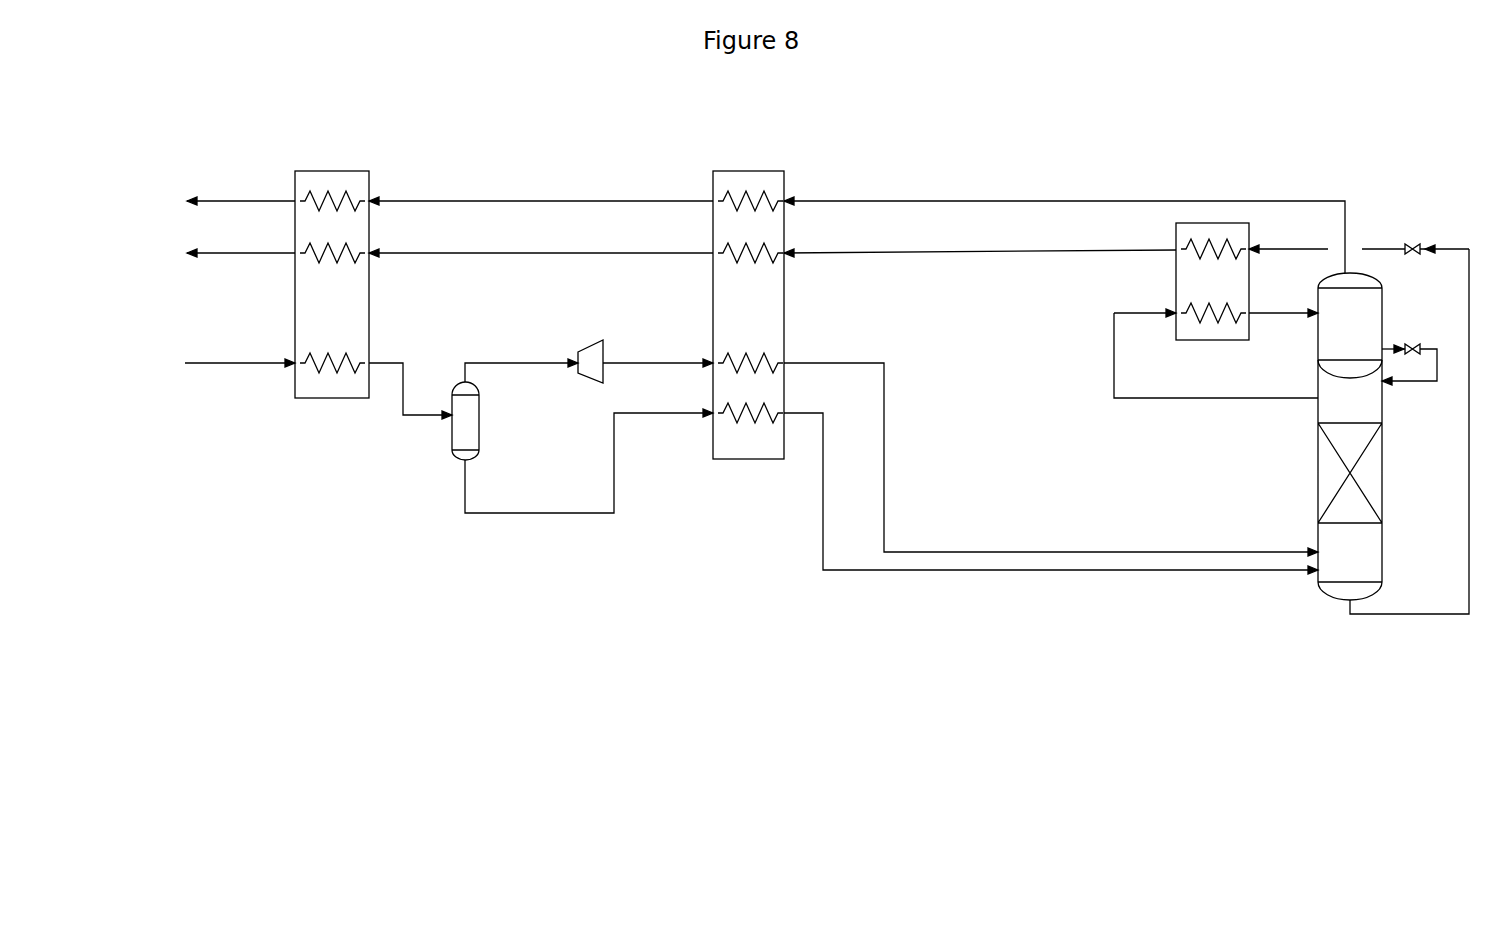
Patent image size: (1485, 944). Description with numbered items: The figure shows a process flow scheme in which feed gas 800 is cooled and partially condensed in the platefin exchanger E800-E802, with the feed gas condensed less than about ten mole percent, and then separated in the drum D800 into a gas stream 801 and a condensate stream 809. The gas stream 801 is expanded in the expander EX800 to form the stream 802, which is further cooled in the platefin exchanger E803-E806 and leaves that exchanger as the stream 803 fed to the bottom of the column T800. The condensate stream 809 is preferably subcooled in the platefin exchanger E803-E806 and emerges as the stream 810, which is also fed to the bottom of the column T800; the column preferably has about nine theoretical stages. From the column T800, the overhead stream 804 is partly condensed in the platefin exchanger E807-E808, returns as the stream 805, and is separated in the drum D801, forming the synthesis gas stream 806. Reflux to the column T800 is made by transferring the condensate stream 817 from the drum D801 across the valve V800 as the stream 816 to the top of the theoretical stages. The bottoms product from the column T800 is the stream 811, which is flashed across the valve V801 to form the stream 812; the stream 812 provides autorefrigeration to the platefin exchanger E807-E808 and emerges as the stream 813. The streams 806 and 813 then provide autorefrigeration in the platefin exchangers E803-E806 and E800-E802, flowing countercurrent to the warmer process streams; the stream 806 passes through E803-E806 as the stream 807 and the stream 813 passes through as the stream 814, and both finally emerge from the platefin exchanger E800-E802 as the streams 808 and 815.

The feed gas 800 is at (299, 386).
The gas stream 801 is at (518, 362).
The expanded stream 802 is at (658, 354).
The stream to column T800 803 is at (1051, 459).
The overhead stream 804 is at (1216, 344).
The return stream to column 805 is at (1283, 304).
The synthesis gas stream 806 is at (1064, 225).
The overhead stream after E803-E806 807 is at (541, 191).
The emerging stream 808 is at (220, 201).
The condensate stream 809 is at (589, 461).
The stream to column T800 810 is at (1051, 507).
The bottoms product stream 811 is at (1409, 431).
The flashed bottoms stream 812 is at (1359, 240).
The emerging stream 813 is at (980, 242).
The stream after E803-E806 814 is at (541, 243).
The emerging stream 815 is at (220, 253).
The reflux stream 816 is at (1409, 377).
The condensate stream 817 is at (1384, 347).
The platefin exchanger E800-E802 is at (329, 273).
The platefin exchanger E803-E806 is at (747, 303).
The platefin exchanger E807-E808 is at (1213, 296).
The drum D800 is at (480, 442).
The expander EX800 is at (595, 385).
The drum D801 is at (1350, 325).
The column T800 is at (1318, 498).
The valve V800 is at (1420, 345).
The valve V801 is at (1414, 246).